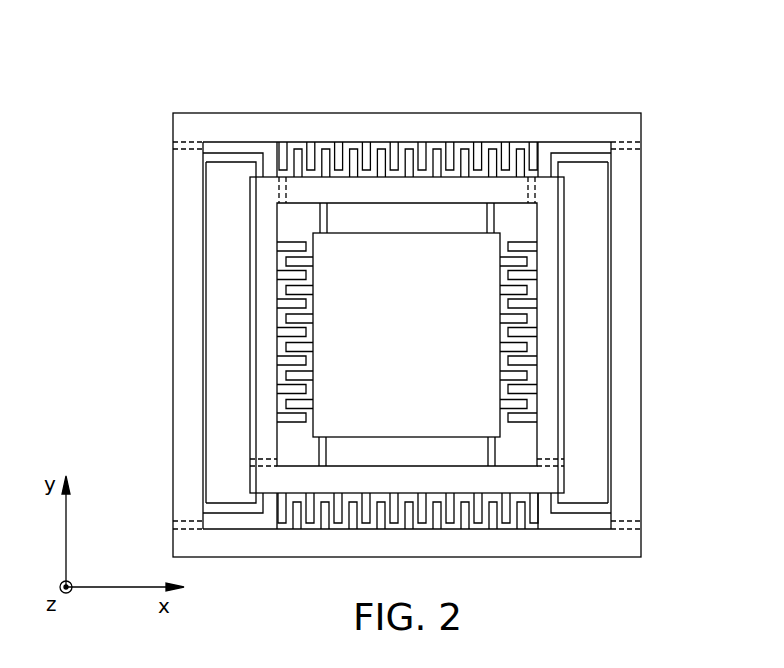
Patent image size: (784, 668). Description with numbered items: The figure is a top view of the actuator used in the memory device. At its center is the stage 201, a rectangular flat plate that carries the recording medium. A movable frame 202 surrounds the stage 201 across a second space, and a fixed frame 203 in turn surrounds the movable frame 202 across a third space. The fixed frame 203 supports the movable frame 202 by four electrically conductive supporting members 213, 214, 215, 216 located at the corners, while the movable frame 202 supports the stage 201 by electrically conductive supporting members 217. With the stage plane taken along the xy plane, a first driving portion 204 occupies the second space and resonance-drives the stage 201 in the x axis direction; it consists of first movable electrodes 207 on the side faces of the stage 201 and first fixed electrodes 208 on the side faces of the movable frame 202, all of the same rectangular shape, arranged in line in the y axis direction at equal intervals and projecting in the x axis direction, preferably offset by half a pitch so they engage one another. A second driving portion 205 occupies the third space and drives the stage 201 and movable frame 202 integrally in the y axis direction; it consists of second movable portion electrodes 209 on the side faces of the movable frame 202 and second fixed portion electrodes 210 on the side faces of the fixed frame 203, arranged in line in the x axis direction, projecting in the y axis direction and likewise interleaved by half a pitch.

The stage 201 is at (475, 284).
The movable frame 202 is at (547, 373).
The fixed frame 203 is at (622, 459).
The first driving portion 204 is at (284, 324).
The second driving portion 205 is at (418, 96).
The first movable electrodes 207 is at (289, 289).
The first fixed electrodes 208 is at (285, 303).
The second movable portion electrodes 209 is at (463, 152).
The second fixed portion electrodes 210 is at (449, 150).
The supporting member 213 is at (600, 510).
The supporting member 214 is at (578, 158).
The supporting member 215 is at (226, 157).
The supporting member 216 is at (243, 508).
The supporting members 217 is at (320, 459).